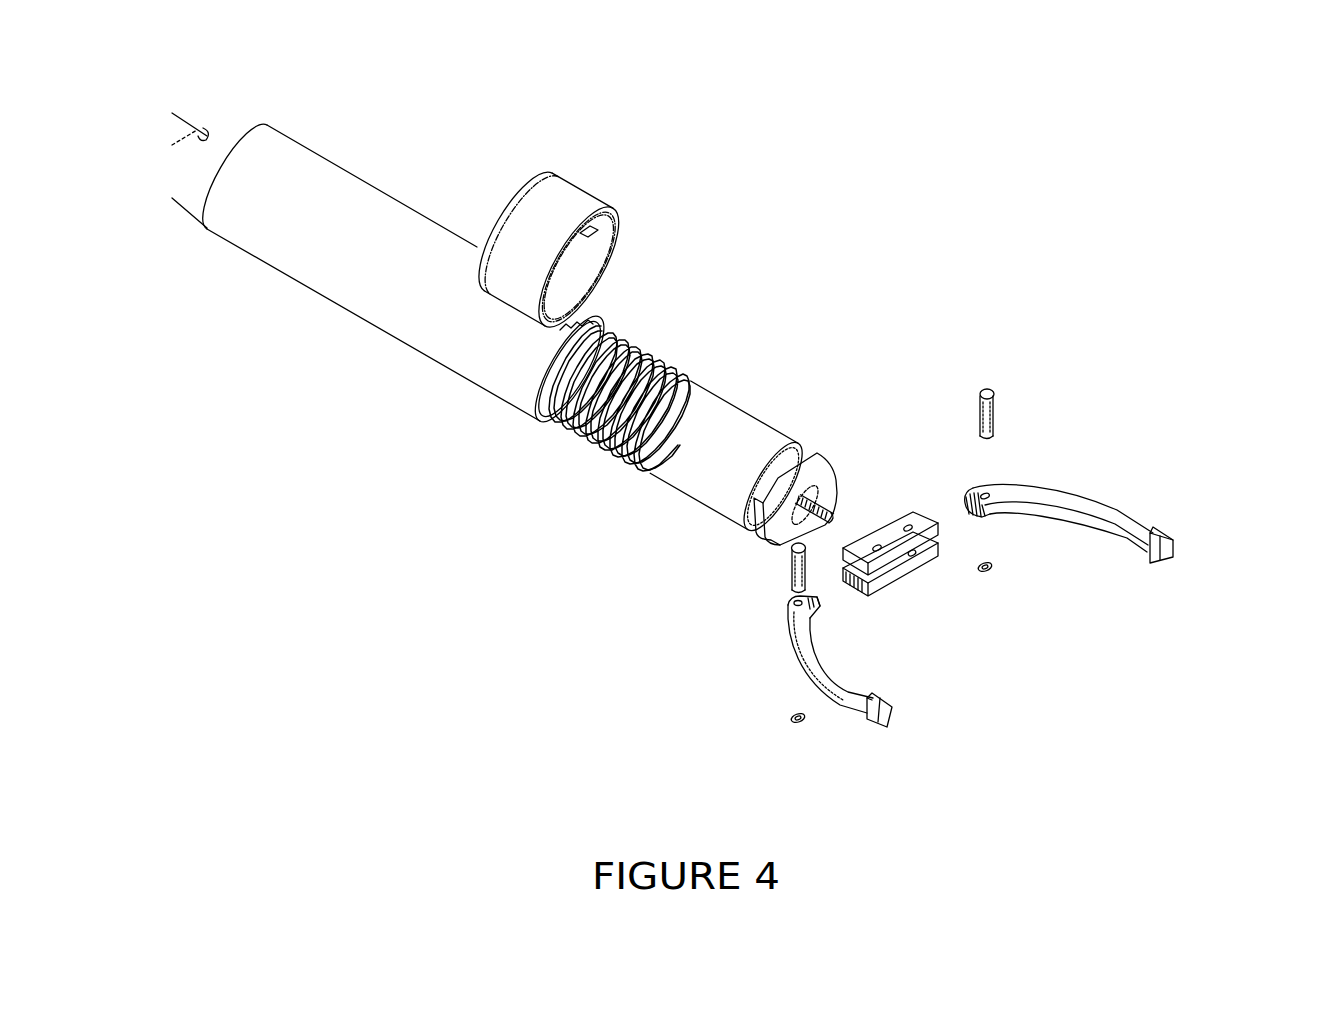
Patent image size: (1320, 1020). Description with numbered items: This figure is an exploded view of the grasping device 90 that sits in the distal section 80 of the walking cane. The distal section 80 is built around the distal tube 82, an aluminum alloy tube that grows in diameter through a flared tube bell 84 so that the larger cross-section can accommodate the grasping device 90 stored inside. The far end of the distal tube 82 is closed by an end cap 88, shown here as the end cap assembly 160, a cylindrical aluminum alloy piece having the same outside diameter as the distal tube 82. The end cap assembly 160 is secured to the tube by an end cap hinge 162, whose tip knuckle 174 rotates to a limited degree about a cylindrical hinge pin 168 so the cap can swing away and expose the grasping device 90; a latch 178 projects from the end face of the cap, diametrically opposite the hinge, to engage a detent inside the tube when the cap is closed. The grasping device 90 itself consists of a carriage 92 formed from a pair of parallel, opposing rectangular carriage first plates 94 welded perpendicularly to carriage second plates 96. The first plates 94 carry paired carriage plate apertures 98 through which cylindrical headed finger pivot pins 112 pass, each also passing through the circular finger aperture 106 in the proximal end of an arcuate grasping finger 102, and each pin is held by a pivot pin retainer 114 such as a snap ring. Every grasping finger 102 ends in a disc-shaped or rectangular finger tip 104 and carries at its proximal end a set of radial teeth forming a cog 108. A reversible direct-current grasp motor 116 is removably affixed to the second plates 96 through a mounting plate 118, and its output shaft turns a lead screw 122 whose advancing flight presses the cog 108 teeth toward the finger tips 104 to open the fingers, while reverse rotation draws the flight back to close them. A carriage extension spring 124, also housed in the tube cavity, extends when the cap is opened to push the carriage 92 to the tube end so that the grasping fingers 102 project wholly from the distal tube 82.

The distal section 80 is at (376, 355).
The distal tube 82 is at (390, 200).
The tube bell 84 is at (243, 124).
The end cap 88 is at (537, 183).
The grasping device 90 is at (1105, 742).
The carriage 92 is at (955, 637).
The carriage first plates 94 is at (880, 588).
The carriage second plates 96 is at (857, 547).
The carriage plate apertures 98 is at (913, 555).
The grasping fingers 102 is at (790, 653).
The finger tip 104 is at (884, 722).
The finger aperture 106 is at (795, 605).
The cog 108 is at (815, 605).
The finger pivot pin 112 is at (796, 568).
The pivot pin retainer 114 is at (796, 722).
The grasp motor 116 is at (735, 425).
The mounting plate 118 is at (768, 530).
The lead screw 122 is at (818, 505).
The carriage extension spring 124 is at (618, 448).
The end cap assembly 160 is at (615, 160).
The end cap hinge 162 is at (673, 280).
The hinge pin 168 is at (535, 380).
The tip knuckle 174 is at (585, 323).
The latch 178 is at (600, 230).